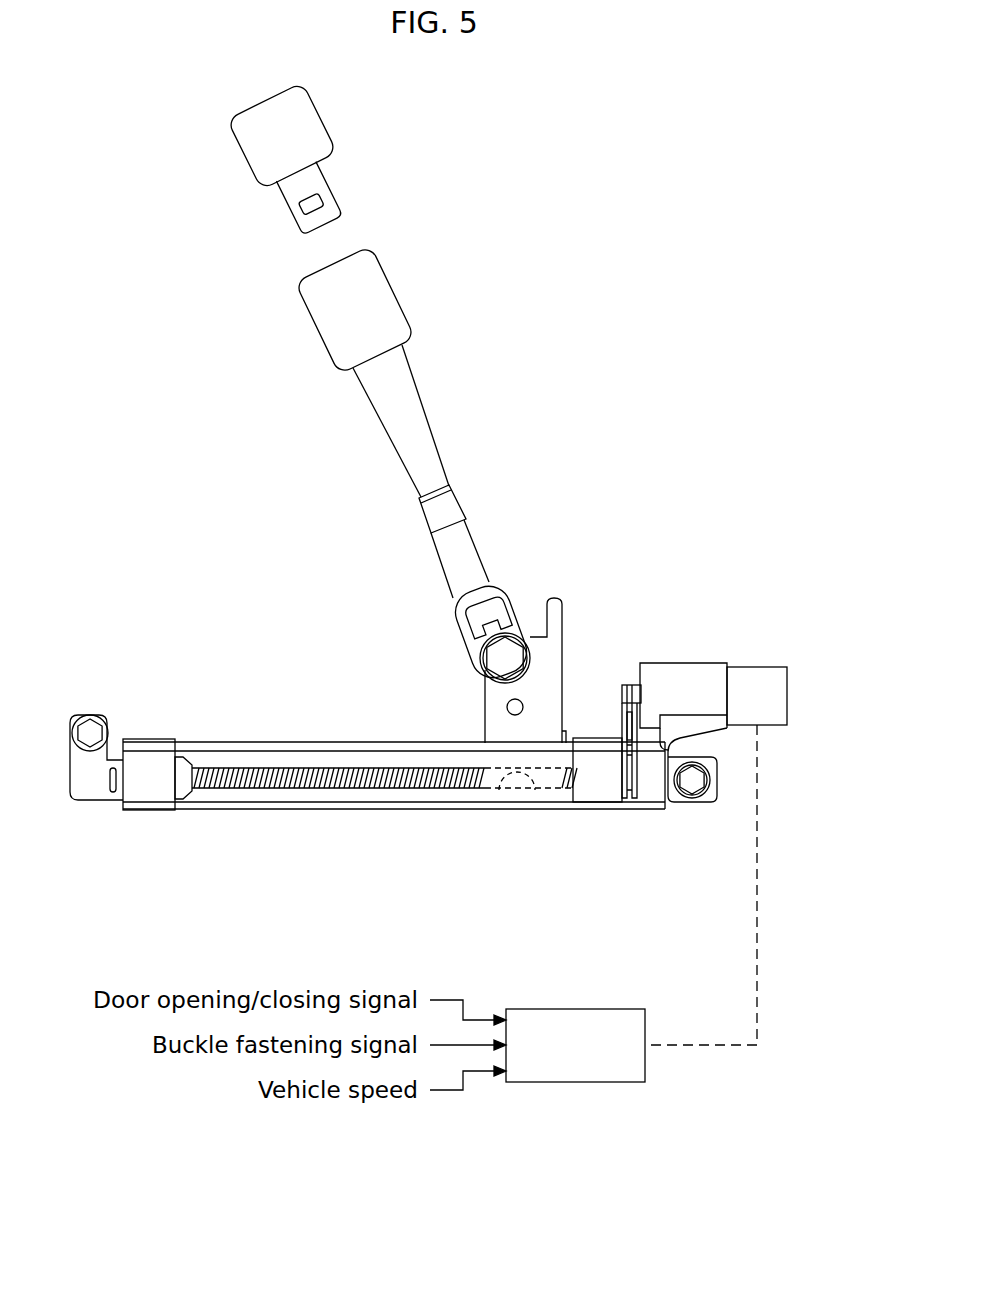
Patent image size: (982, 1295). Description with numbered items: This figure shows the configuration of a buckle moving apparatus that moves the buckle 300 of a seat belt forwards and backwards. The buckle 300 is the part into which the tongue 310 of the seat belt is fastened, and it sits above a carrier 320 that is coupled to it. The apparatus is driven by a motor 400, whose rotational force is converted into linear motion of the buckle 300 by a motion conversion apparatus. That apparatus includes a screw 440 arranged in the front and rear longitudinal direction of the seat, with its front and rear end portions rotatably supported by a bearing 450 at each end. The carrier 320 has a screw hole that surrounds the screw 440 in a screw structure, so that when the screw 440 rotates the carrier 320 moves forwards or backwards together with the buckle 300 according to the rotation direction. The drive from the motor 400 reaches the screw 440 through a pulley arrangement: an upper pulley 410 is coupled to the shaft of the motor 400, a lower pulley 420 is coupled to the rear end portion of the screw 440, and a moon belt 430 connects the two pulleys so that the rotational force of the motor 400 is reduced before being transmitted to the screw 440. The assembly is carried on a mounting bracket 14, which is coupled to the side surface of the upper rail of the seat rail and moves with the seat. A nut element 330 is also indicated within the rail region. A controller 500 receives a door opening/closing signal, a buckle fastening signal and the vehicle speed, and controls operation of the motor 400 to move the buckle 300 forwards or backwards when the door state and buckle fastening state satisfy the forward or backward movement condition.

The mounting bracket 14 is at (220, 810).
The buckle 300 is at (388, 300).
The tongue 310 is at (322, 128).
The carrier 320 is at (545, 658).
The moving nut 330 is at (535, 797).
The motor 400 is at (760, 672).
The upper pulley 410 is at (635, 697).
The lower pulley 420 is at (632, 798).
The moon belt 430 is at (627, 727).
The screw 440 is at (365, 793).
The bearing 450 is at (147, 788).
The controller 500 is at (573, 1082).